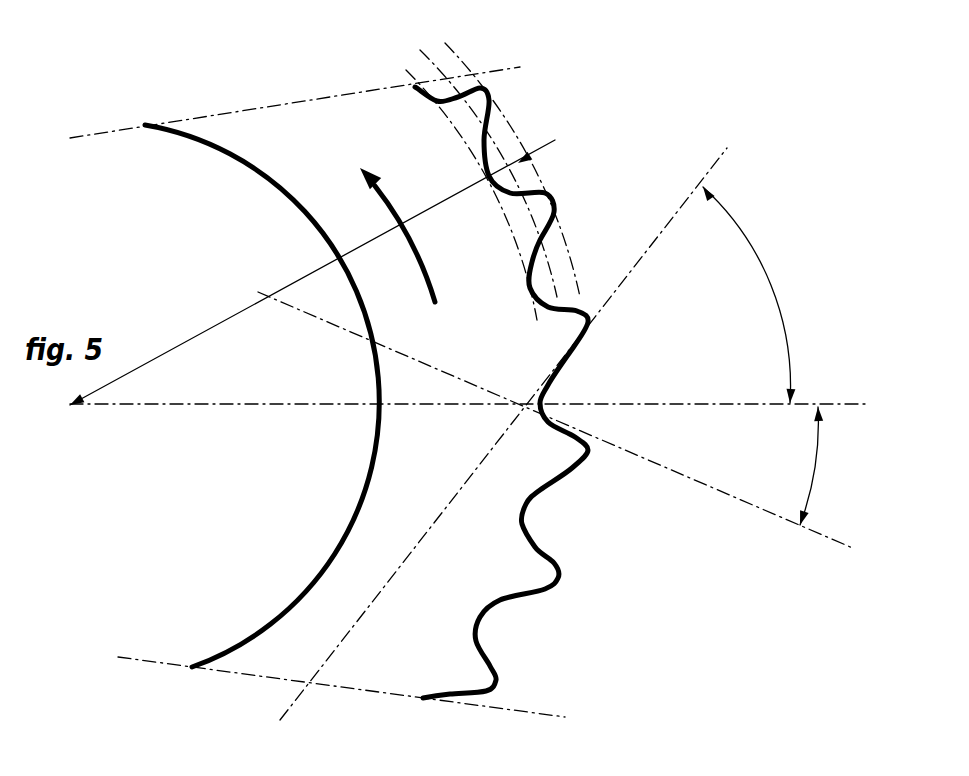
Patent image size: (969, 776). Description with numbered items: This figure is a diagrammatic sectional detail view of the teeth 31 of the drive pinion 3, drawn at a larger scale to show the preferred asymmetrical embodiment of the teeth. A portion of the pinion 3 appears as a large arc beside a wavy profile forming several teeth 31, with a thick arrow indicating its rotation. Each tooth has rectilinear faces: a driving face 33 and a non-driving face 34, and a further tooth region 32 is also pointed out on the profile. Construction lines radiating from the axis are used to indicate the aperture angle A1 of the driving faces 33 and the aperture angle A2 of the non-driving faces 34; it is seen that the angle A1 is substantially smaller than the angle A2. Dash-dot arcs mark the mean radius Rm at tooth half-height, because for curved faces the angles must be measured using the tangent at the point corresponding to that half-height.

The pinion 3 is at (308, 152).
The teeth 31 is at (653, 128).
The tooth flank 32 is at (553, 462).
The driving faces 33 is at (567, 427).
The non-driving faces 34 is at (565, 357).
The mean radius Rm is at (323, 262).
The aperture angle of the driving faces A1 is at (834, 466).
The aperture angle of the non-driving faces A2 is at (755, 295).